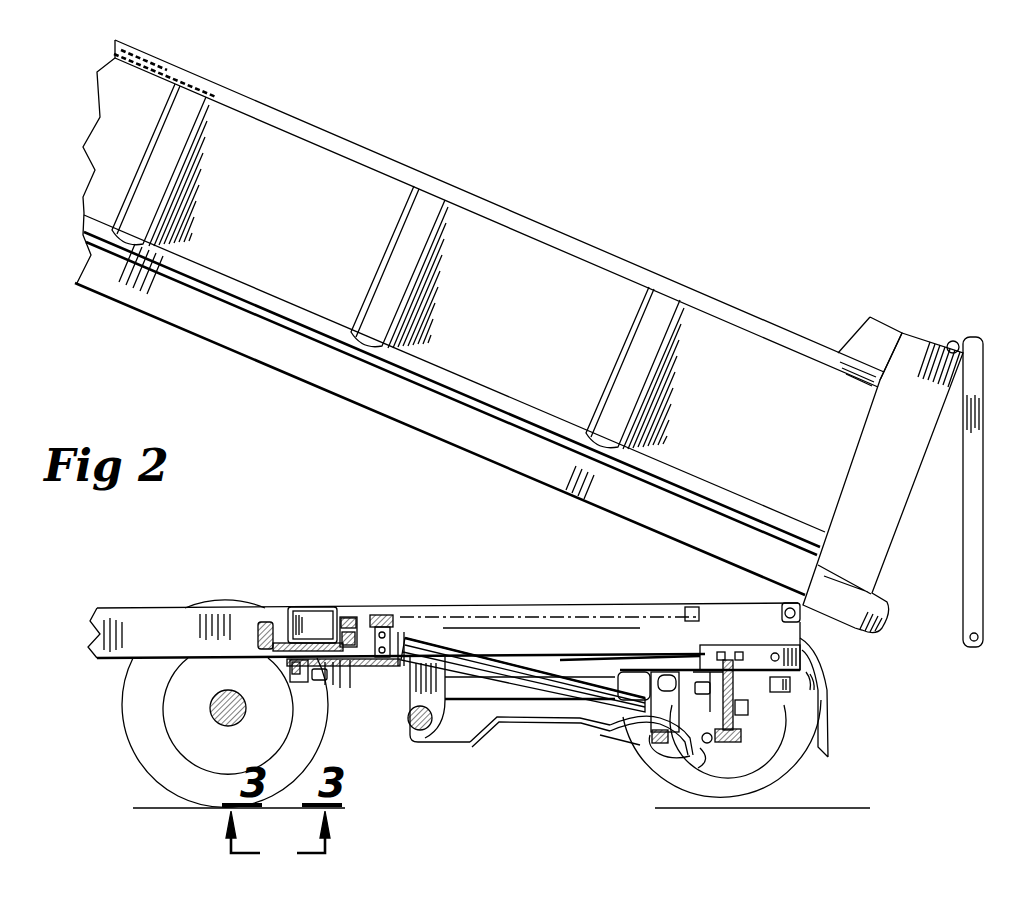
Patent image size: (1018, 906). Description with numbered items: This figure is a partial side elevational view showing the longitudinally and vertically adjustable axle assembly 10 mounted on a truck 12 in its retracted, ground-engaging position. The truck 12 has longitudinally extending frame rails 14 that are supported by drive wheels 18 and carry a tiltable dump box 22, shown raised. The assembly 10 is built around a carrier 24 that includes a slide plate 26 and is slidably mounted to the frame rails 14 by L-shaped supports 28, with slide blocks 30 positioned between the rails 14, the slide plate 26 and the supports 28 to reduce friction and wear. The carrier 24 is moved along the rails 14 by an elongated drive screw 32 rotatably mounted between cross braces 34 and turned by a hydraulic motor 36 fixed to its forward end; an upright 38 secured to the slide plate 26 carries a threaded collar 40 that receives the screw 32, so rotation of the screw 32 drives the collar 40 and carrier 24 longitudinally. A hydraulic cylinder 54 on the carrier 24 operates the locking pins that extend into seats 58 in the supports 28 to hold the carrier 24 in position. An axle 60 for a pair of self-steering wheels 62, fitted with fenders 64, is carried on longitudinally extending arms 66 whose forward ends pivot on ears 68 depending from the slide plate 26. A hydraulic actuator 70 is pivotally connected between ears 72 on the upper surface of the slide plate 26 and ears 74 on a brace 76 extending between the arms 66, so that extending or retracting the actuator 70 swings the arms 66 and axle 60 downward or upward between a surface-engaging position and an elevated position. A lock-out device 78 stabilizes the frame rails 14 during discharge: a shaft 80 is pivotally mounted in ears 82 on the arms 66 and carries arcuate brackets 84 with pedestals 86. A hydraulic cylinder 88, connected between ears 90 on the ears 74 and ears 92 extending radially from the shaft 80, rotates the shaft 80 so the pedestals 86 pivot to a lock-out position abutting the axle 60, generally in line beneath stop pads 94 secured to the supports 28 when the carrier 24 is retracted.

The longitudinally and vertically adjustable axle assembly 10 is at (384, 512).
The truck 12 is at (829, 297).
The frame rails 14 is at (148, 620).
The drive wheels 18 is at (138, 762).
The tiltable dump box 22 is at (713, 307).
The carrier 24 is at (430, 643).
The slide plate 26 is at (330, 675).
The L-shaped supports 28 is at (803, 653).
The slide blocks 30 is at (637, 657).
The drive screw 32 is at (363, 608).
The cross braces 34 is at (258, 637).
The hydraulic motor 36 is at (300, 607).
The upright 38 is at (397, 650).
The threaded collar 40 is at (380, 615).
The hydraulic cylinder 54 is at (290, 672).
The seats 58 is at (318, 676).
The axle 60 is at (741, 734).
The self-steering wheels 62 is at (810, 753).
The fenders 64 is at (828, 717).
The arms 66 is at (512, 718).
The ears 68 is at (394, 710).
The hydraulic actuator 70 is at (528, 666).
The ears 72 is at (386, 668).
The ears 74 is at (687, 663).
The brace 76 is at (620, 738).
The lock-out device 78 is at (703, 779).
The shaft 80 is at (683, 752).
The ears 82 is at (652, 743).
The arcuate brackets 84 is at (625, 722).
The pedestals 86 is at (748, 708).
The hydraulic cylinder 88 is at (733, 690).
The ears 90 is at (700, 740).
The ears 92 is at (710, 742).
The stop pads 94 is at (747, 660).